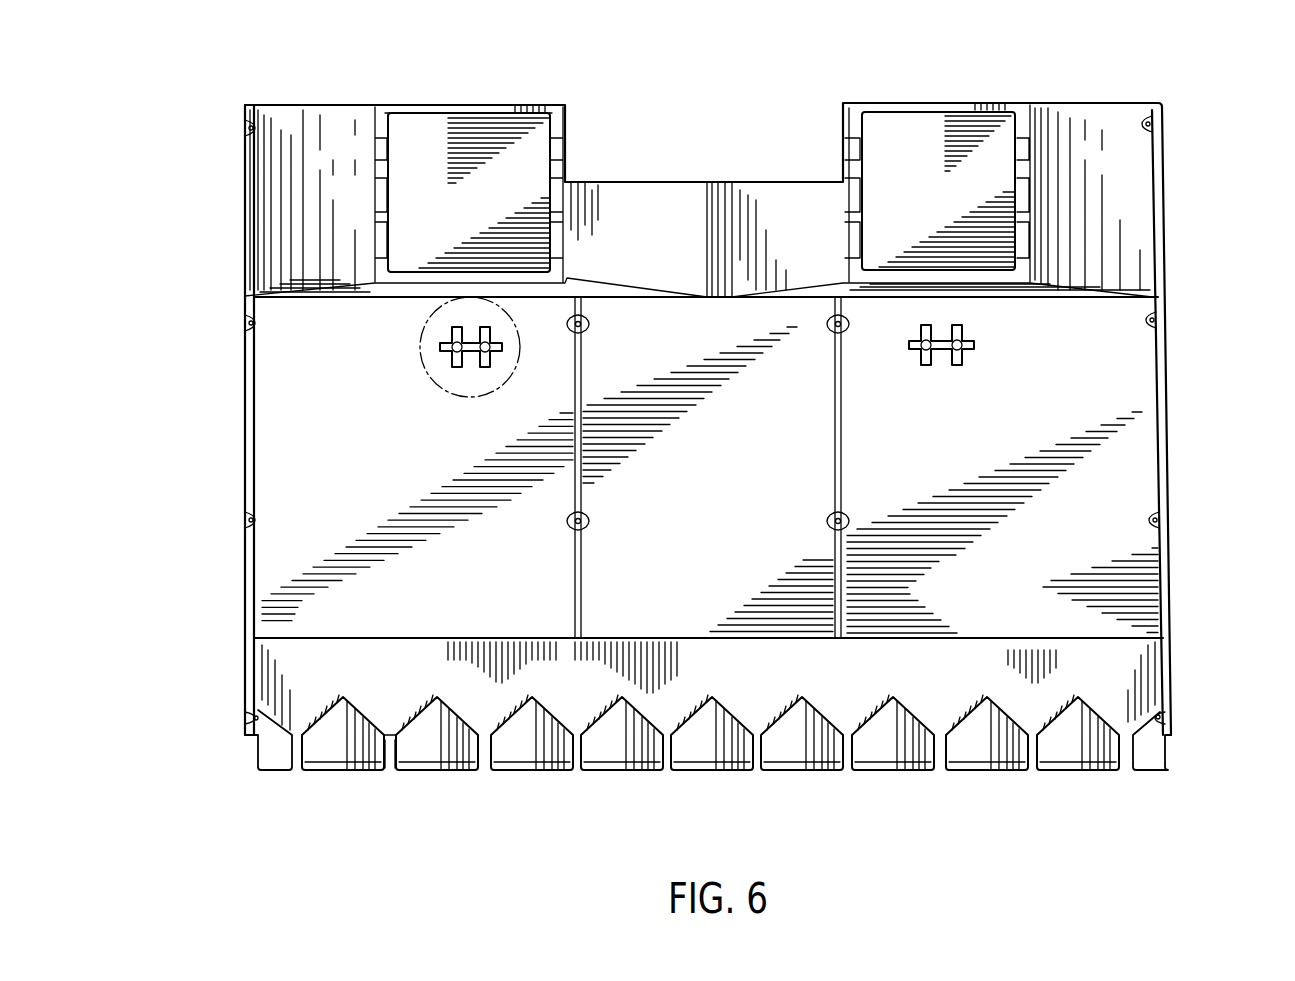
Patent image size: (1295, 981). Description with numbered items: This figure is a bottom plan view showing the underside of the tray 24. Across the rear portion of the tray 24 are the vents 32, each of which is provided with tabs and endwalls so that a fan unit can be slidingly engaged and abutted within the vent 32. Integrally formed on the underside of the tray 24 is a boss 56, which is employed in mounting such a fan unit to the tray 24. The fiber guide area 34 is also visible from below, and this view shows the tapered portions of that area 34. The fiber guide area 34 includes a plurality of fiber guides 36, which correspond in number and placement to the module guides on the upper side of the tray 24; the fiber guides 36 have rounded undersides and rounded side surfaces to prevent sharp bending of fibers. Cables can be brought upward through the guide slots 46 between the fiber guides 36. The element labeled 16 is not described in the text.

The fastener assembly 16 is at (425, 365).
The tray 24 is at (759, 388).
The vent 32 is at (863, 163).
The fiber guide area 34 is at (268, 668).
The fiber guide 36 is at (398, 702).
The guide slot 46 is at (393, 772).
The boss 56 is at (968, 352).